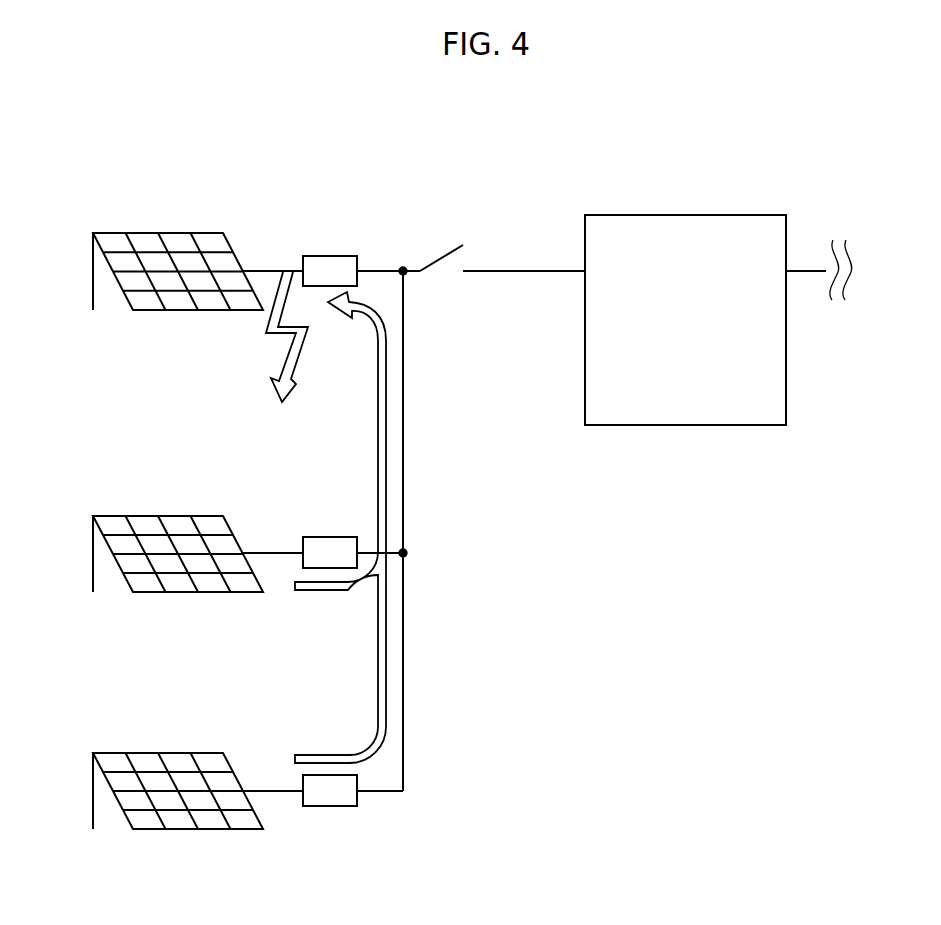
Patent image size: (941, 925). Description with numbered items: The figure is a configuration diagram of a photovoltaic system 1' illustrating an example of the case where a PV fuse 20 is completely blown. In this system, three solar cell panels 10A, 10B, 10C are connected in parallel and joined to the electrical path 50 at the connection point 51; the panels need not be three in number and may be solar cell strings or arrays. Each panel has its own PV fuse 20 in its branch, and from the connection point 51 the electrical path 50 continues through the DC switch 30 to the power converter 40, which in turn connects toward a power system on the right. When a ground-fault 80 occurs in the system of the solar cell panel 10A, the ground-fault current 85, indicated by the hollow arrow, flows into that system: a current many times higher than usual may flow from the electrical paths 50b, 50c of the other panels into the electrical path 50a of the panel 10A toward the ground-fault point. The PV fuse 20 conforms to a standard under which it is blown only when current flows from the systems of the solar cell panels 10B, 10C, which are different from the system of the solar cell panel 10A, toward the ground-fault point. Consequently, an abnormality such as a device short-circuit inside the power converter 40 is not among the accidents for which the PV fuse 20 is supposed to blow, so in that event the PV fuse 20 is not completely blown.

The photovoltaic system 1' is at (873, 158).
The solar cell panel 10A is at (135, 232).
The solar cell panel 10B is at (135, 515).
The solar cell panel 10C is at (135, 752).
The PV fuse 20 is at (333, 256).
The DC switch 30 is at (432, 262).
The power converter 40 is at (714, 215).
The electrical path (DC bus) 50 is at (524, 270).
The electrical path 50a is at (272, 270).
The electrical path 50b is at (272, 552).
The electrical path 50c is at (272, 790).
The connection point 51 is at (402, 266).
The ground-fault 80 is at (283, 365).
The ground-fault current 85 is at (378, 412).